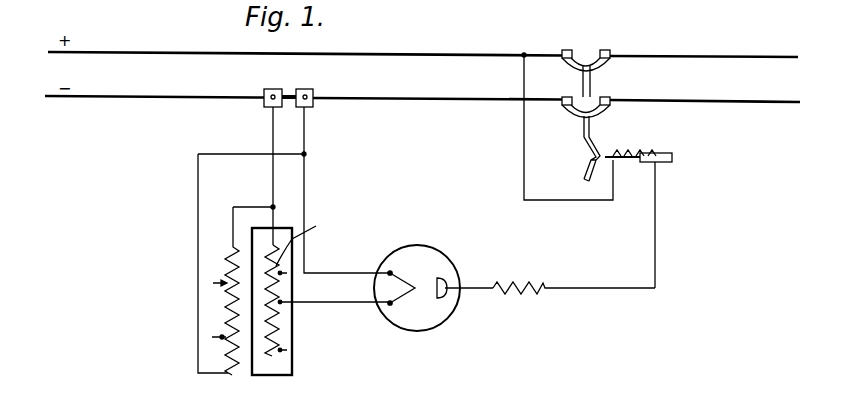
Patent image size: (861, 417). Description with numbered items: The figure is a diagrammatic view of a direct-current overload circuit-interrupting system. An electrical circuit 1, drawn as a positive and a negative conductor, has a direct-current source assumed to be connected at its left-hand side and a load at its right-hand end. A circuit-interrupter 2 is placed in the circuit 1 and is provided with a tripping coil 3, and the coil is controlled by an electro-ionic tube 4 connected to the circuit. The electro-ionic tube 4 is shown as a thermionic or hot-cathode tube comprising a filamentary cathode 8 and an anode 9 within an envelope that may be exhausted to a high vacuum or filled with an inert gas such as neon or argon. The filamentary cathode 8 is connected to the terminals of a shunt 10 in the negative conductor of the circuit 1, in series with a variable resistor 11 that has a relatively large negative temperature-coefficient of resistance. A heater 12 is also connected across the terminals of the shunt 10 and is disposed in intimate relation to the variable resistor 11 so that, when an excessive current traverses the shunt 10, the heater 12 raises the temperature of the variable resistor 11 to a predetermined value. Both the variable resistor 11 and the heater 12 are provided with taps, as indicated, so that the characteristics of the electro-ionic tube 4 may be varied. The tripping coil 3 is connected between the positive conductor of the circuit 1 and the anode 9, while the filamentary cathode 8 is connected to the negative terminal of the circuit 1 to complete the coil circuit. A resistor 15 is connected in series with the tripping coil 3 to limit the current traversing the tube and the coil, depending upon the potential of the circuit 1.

The electrical circuit 1 is at (408, 88).
The circuit-interrupter 2 is at (606, 112).
The tripping coil 3 is at (633, 161).
The electro-ionic tube 4 is at (438, 318).
The filamentary cathode 8 is at (400, 274).
The anode 9 is at (443, 279).
The shunt 10 is at (286, 104).
The variable resistor 11 is at (281, 317).
The heater 12 is at (226, 303).
The resistor 15 is at (516, 295).